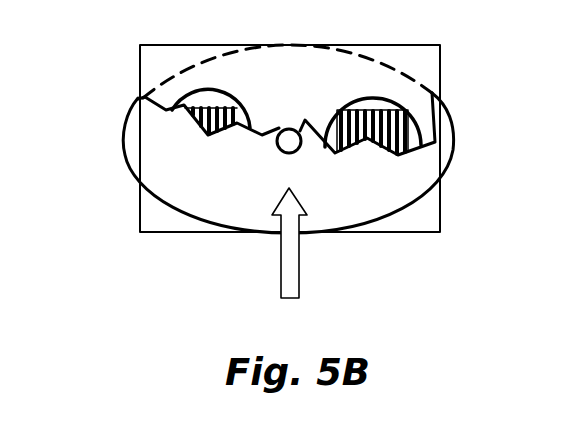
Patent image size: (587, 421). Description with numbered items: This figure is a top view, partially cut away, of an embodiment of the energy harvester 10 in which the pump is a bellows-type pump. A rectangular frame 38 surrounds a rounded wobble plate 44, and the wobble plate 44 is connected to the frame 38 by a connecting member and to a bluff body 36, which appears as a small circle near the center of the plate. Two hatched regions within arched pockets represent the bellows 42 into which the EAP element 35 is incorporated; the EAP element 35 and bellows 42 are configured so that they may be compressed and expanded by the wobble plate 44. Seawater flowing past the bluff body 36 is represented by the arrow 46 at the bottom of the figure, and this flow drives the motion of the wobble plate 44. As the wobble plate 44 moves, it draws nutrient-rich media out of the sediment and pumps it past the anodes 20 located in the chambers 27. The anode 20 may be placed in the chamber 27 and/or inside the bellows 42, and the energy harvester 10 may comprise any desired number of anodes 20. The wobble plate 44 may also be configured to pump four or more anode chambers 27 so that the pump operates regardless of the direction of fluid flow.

The energy harvester 10 is at (70, 68).
The anode 20 is at (336, 108).
The chamber 27 is at (370, 99).
The EAP element 35 is at (381, 92).
The bluff body 36 is at (302, 146).
The frame 38 is at (442, 75).
The bellows 42 is at (201, 92).
The wobble plate 44 is at (454, 137).
The arrow 46 is at (300, 258).